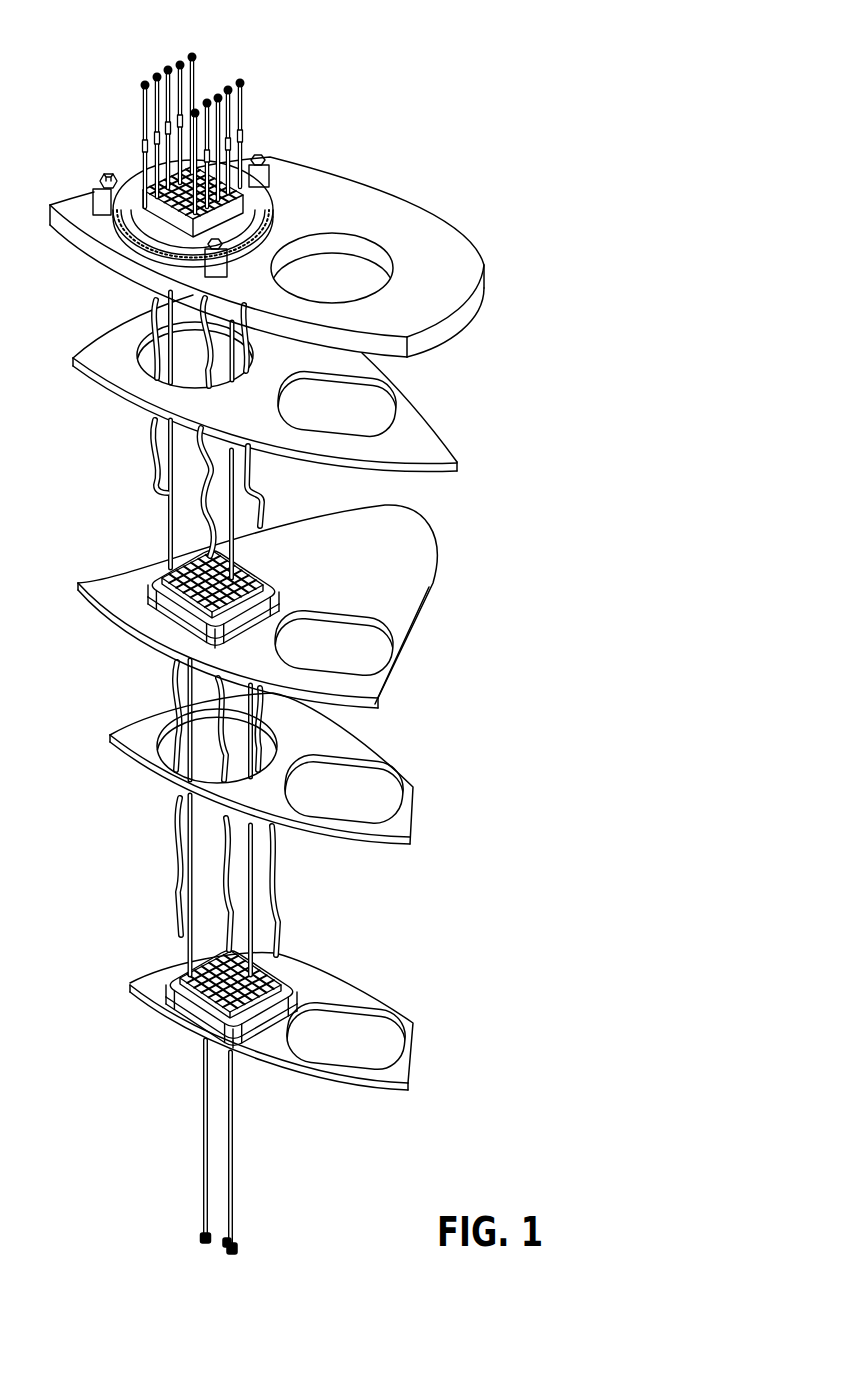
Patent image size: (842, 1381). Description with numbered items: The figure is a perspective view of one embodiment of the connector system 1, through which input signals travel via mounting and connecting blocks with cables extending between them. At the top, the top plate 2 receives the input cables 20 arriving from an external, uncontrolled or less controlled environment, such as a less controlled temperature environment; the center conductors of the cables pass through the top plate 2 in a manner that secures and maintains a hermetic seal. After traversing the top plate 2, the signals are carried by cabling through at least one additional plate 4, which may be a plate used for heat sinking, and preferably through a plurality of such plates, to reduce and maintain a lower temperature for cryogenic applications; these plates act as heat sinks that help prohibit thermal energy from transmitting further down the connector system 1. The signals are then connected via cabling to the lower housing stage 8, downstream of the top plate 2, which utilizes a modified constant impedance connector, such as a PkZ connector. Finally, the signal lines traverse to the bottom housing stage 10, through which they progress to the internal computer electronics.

The connector system 1 is at (375, 633).
The top plate 2 is at (373, 190).
The additional plate 4 is at (413, 797).
The lower housing stage 8 is at (433, 587).
The bottom housing stage 10 is at (413, 1023).
The input cables 20 is at (197, 85).